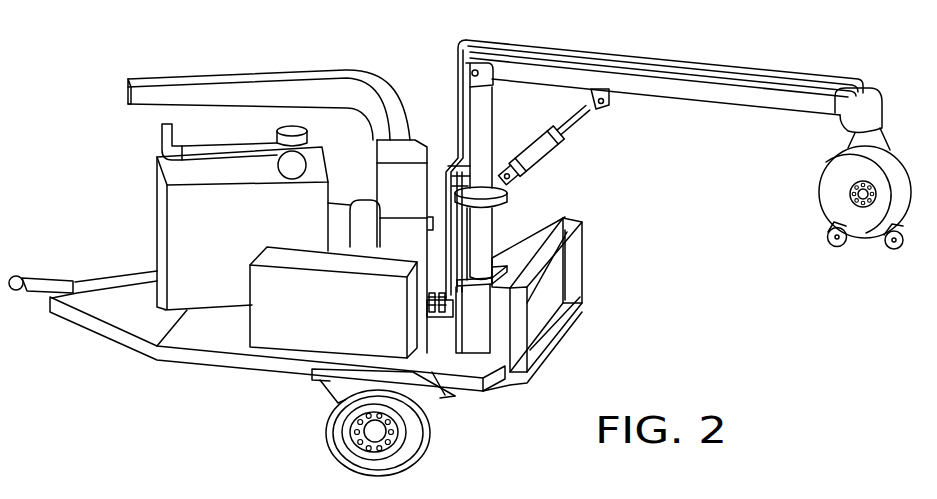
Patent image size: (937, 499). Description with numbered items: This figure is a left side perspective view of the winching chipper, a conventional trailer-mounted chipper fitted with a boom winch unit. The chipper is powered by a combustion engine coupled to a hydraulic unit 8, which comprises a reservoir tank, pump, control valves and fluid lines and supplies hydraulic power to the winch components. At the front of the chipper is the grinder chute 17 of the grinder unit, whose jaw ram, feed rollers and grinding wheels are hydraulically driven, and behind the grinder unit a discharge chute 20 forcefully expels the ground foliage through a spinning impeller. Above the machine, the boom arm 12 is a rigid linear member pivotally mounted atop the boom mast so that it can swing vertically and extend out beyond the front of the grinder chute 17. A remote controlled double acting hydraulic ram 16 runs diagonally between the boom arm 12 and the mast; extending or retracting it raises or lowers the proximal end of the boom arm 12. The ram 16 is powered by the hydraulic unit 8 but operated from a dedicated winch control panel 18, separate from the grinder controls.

The hydraulic unit 8 is at (307, 335).
The boom arm 12 is at (718, 88).
The remote controlled double acting hydraulic ram 16 is at (547, 147).
The grinder chute 17 is at (572, 268).
The winch control panel 18 is at (445, 316).
The discharge chute 20 is at (278, 88).